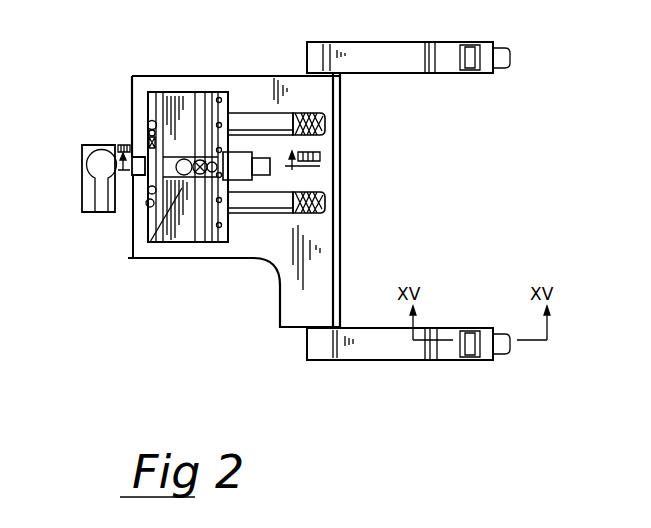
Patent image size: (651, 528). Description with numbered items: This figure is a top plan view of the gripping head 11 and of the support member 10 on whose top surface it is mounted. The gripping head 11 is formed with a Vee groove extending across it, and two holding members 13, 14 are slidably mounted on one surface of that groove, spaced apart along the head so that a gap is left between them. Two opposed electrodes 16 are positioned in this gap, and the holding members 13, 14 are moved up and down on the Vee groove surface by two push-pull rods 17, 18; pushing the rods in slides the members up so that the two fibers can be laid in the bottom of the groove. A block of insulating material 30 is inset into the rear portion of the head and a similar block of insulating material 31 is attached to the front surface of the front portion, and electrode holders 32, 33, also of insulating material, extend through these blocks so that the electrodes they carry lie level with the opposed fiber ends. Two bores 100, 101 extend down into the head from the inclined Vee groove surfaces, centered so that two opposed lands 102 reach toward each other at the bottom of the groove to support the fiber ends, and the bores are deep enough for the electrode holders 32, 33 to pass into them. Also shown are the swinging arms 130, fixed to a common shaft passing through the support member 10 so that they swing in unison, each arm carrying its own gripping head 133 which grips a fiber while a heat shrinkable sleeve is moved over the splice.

The support member 10 is at (263, 95).
The gripping head 11 is at (138, 212).
The holding member 13 is at (178, 228).
The holding member 14 is at (152, 120).
The electrode 16 is at (187, 152).
The push-pull rod 17 is at (278, 280).
The push-pull rod 18 is at (281, 95).
The block of insulating material 30 is at (143, 172).
The block of insulating material 31 is at (242, 158).
The electrode holder 32 is at (137, 157).
The electrode holder 33 is at (263, 167).
The bore 100 is at (148, 243).
The bore 101 is at (208, 235).
The land 102 is at (205, 152).
The swinging arm 130 is at (367, 55).
The gripping head 133 is at (447, 63).